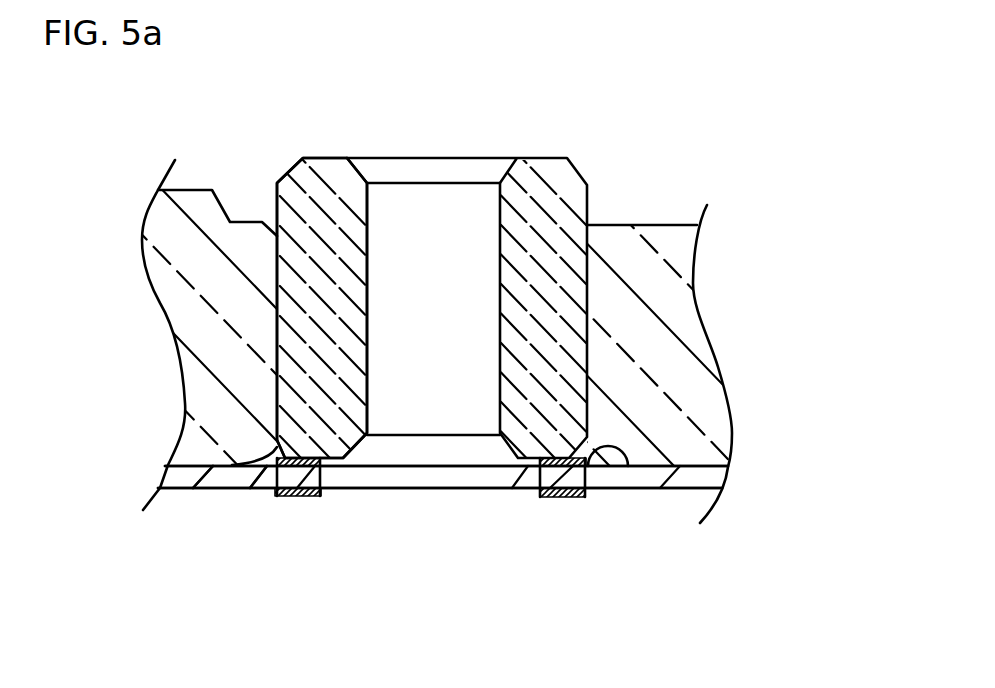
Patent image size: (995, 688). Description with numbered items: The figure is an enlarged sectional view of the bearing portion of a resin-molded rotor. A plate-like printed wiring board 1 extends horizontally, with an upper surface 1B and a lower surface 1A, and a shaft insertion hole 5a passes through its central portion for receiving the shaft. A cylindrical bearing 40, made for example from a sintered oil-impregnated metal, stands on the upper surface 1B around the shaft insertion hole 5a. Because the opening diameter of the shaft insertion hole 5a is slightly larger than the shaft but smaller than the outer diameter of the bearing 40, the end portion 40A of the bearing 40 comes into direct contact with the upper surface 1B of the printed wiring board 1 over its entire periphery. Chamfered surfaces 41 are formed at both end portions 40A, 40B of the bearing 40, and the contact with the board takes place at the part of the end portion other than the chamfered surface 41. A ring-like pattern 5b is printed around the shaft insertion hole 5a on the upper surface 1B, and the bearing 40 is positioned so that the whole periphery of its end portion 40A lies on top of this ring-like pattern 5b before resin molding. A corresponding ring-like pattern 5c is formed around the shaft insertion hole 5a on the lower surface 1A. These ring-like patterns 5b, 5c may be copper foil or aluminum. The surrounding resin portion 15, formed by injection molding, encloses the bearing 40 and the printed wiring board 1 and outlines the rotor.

The printed wiring board 1 is at (703, 477).
The lower surface 1A is at (652, 490).
The upper surface 1B is at (658, 470).
The shaft insertion hole 5a is at (540, 477).
The ring-like pattern 5b is at (628, 468).
The ring-like pattern 5c is at (537, 490).
The resin portion 15 is at (203, 247).
The bearing 40 is at (543, 190).
The end portion 40A is at (345, 477).
The end portion 40B is at (316, 176).
The chamfered surface 41 is at (216, 486).